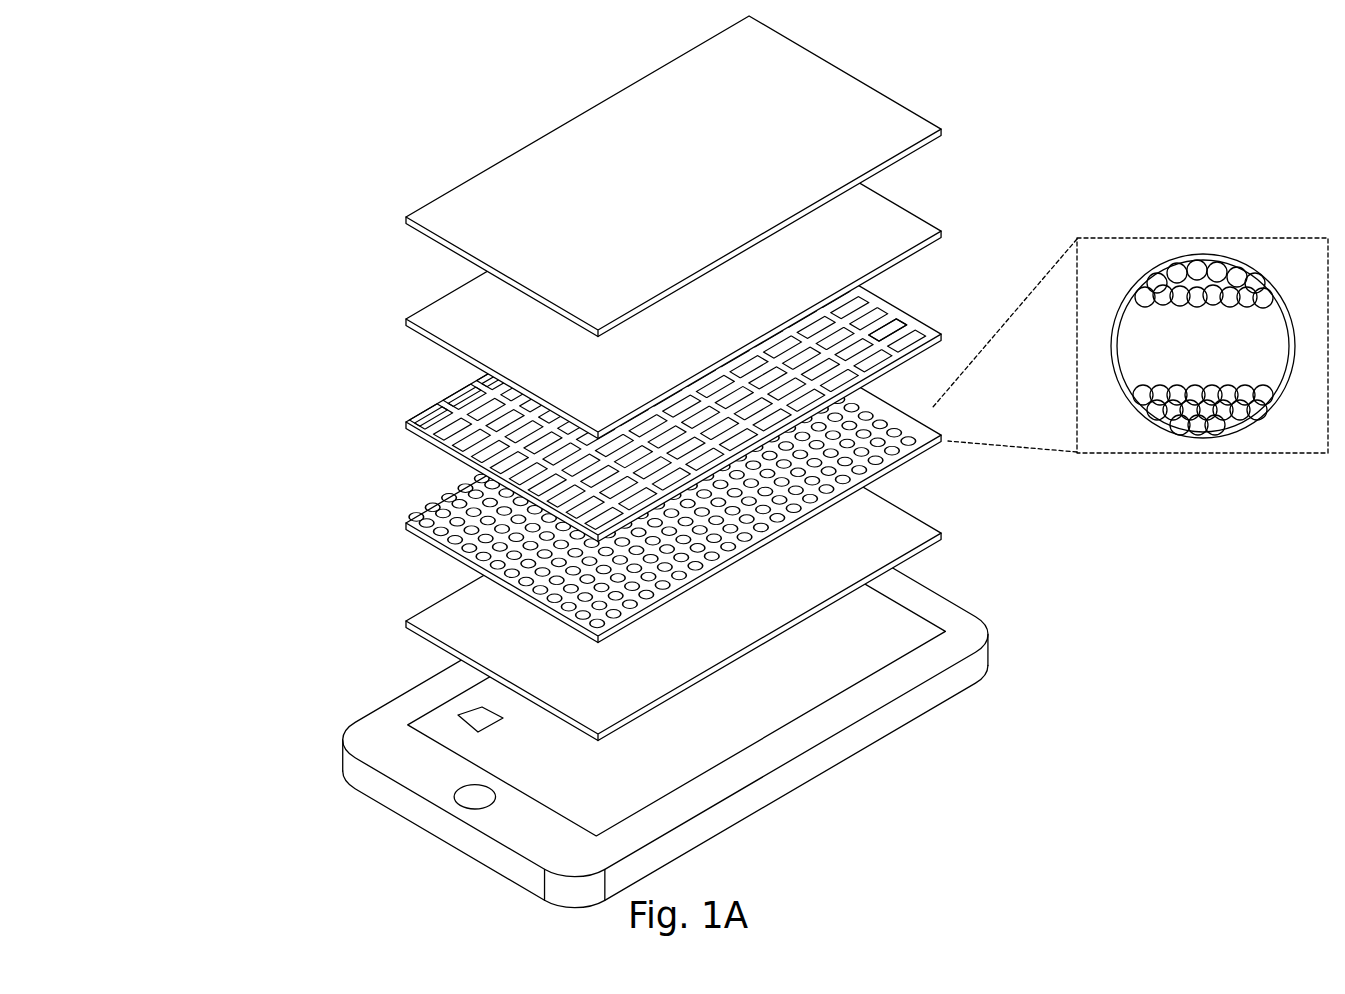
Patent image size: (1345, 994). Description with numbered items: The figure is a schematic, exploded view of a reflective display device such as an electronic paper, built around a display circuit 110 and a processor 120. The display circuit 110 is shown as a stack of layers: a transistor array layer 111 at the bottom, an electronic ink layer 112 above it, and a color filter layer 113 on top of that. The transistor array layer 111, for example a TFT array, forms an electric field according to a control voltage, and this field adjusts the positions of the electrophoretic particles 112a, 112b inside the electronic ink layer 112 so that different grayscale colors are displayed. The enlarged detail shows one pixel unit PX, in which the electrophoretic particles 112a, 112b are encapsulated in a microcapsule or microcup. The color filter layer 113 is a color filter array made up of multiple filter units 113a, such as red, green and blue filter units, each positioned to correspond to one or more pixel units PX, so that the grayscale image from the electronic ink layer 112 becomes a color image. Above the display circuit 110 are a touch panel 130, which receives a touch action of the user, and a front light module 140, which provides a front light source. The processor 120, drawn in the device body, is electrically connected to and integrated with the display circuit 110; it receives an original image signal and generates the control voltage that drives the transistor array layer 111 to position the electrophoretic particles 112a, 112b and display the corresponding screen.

The display circuit 110 is at (277, 367).
The transistor array layer 111 is at (452, 598).
The electronic ink layer 112 is at (452, 495).
The electrophoretic particles 112a is at (1222, 287).
The electrophoretic particles 112b is at (1193, 423).
The color filter layer 113 is at (452, 392).
The filter units 113a is at (890, 325).
The processor 120 is at (472, 717).
The touch panel 130 is at (452, 298).
The front light module 140 is at (452, 202).
The pixel units PX is at (1196, 240).